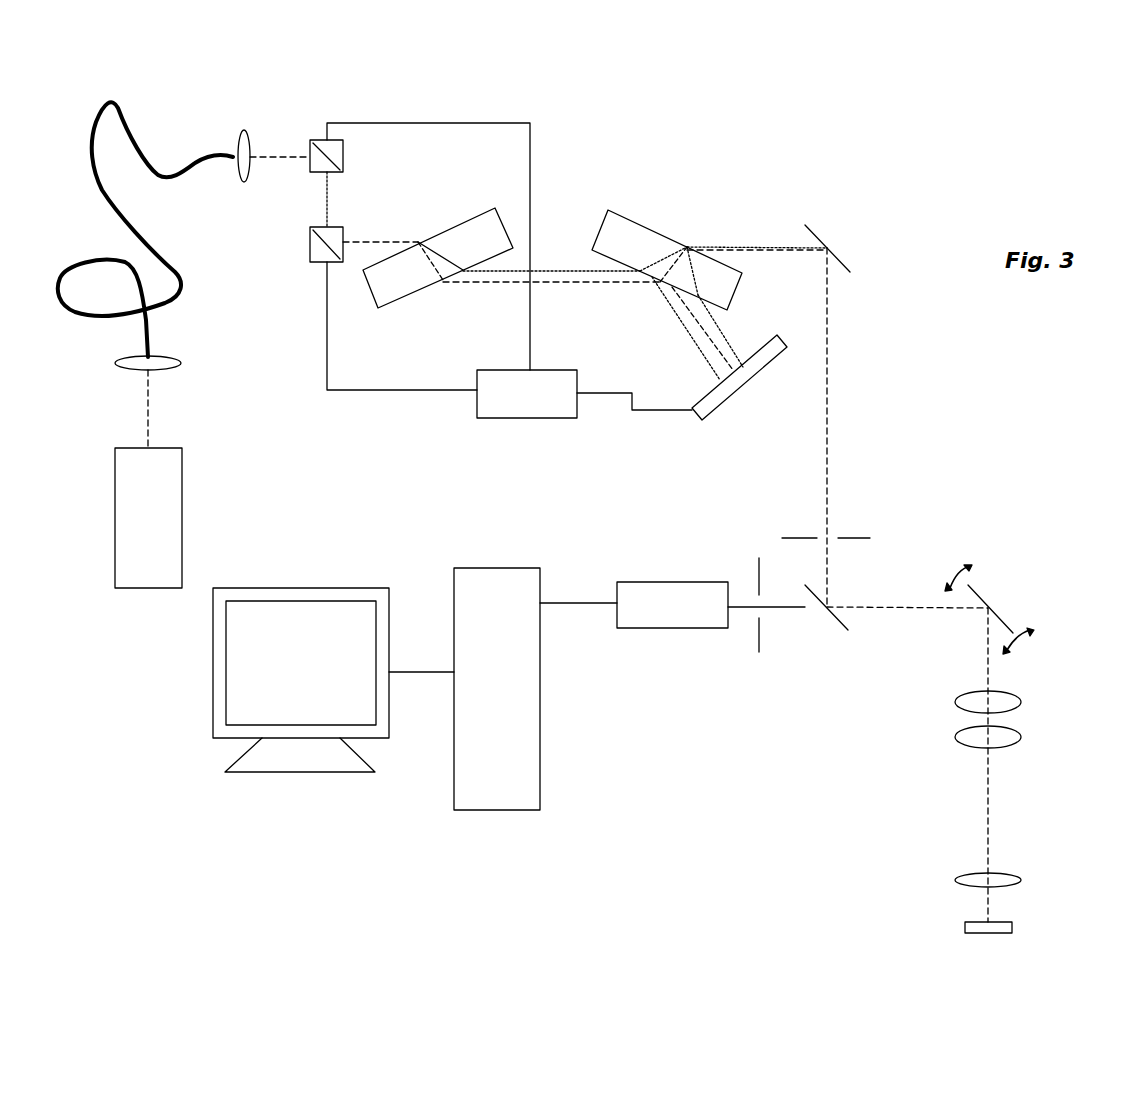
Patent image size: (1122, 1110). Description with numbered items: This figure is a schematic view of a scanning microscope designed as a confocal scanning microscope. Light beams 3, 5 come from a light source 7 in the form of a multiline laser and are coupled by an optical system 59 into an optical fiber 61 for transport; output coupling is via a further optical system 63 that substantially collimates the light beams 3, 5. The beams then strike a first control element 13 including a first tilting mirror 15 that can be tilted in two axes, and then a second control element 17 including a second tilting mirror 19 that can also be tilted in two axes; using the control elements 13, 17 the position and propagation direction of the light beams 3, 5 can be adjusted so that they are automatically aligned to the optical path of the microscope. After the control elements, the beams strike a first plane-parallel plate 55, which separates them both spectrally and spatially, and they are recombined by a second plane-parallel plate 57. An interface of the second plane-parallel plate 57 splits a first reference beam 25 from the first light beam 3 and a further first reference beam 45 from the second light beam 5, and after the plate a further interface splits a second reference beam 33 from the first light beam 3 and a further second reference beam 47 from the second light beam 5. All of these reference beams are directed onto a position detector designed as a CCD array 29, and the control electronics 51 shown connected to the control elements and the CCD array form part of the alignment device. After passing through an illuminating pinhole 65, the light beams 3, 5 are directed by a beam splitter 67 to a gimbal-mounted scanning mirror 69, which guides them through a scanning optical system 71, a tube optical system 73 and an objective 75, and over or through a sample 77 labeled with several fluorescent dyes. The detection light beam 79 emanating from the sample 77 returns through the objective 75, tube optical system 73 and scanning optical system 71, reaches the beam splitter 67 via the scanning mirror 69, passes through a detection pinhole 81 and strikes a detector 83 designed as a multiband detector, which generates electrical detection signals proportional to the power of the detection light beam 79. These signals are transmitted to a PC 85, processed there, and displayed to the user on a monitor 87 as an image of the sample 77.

The first light beam 3 is at (270, 163).
The second light beam 5 is at (273, 153).
The light source 7 is at (163, 488).
The first control element 13 is at (313, 138).
The first tilting mirror 15 is at (343, 165).
The second control element 17 is at (307, 237).
The second tilting mirror 19 is at (343, 262).
The first reference beam 25 is at (673, 298).
The CCD array 29 is at (712, 400).
The second reference beam 33 is at (722, 317).
The further first reference beam 45 is at (682, 303).
The further second reference beam 47 is at (737, 343).
The controller 51 is at (507, 358).
The first plane-parallel plate 55 is at (470, 228).
The second plane-parallel plate 57 is at (622, 228).
The optical system 59 is at (160, 363).
The optical fiber 61 is at (183, 273).
The further optical system 63 is at (247, 175).
The illuminating pinhole 65 is at (792, 538).
The beam splitter 67 is at (833, 615).
The scanning mirror 69 is at (980, 598).
The scanning optical system 71 is at (1000, 702).
The tube optical system 73 is at (1000, 737).
The objective 75 is at (975, 878).
The sample 77 is at (998, 923).
The detection light beam 79 is at (795, 608).
The detection pinhole 81 is at (757, 642).
The detector 83 is at (660, 593).
The PC 85 is at (477, 592).
The monitor 87 is at (305, 615).